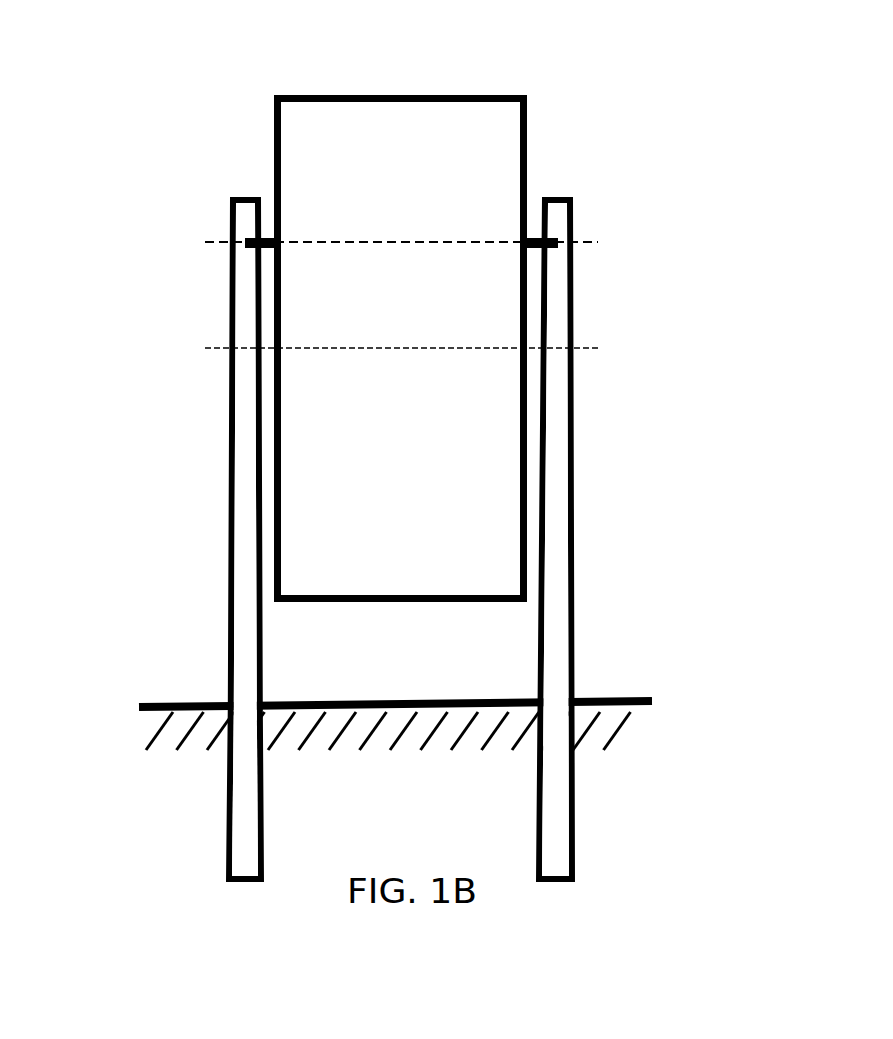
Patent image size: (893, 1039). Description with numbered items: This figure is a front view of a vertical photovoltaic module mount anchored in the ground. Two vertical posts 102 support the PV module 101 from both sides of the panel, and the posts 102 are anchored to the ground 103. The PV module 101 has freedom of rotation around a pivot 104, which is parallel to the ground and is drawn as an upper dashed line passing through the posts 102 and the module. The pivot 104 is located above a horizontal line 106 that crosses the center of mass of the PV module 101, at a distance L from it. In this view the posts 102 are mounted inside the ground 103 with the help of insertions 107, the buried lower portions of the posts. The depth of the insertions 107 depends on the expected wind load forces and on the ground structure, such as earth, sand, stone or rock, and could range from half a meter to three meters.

The PV module 101 is at (505, 125).
The vertical posts 102 is at (240, 653).
The ground 103 is at (603, 697).
The pivot 104 is at (227, 242).
The horizontal line 106 is at (337, 348).
The insertions 107 is at (245, 835).